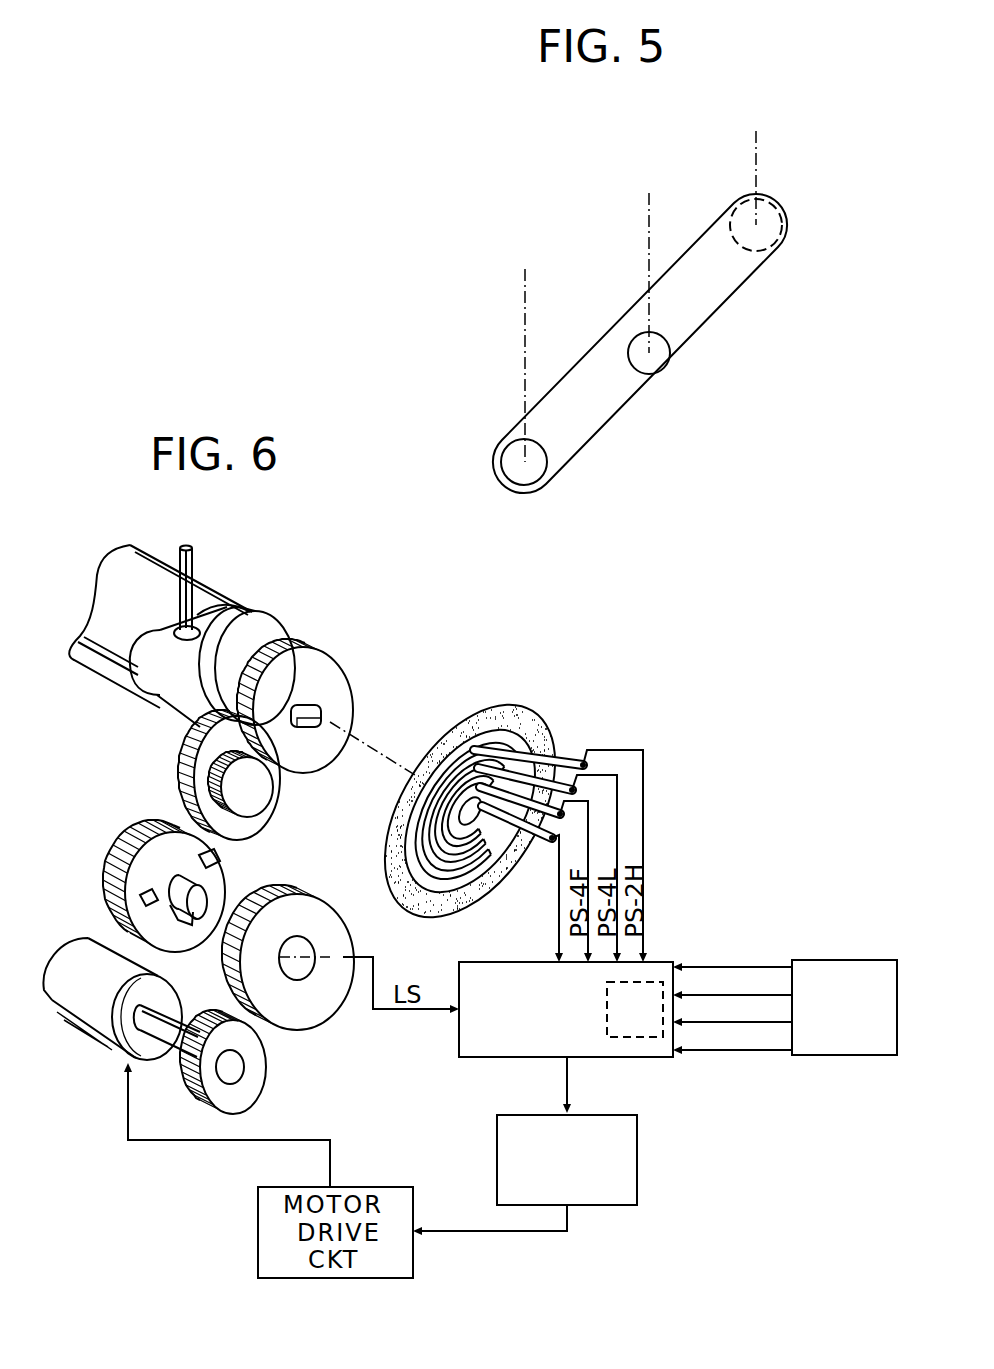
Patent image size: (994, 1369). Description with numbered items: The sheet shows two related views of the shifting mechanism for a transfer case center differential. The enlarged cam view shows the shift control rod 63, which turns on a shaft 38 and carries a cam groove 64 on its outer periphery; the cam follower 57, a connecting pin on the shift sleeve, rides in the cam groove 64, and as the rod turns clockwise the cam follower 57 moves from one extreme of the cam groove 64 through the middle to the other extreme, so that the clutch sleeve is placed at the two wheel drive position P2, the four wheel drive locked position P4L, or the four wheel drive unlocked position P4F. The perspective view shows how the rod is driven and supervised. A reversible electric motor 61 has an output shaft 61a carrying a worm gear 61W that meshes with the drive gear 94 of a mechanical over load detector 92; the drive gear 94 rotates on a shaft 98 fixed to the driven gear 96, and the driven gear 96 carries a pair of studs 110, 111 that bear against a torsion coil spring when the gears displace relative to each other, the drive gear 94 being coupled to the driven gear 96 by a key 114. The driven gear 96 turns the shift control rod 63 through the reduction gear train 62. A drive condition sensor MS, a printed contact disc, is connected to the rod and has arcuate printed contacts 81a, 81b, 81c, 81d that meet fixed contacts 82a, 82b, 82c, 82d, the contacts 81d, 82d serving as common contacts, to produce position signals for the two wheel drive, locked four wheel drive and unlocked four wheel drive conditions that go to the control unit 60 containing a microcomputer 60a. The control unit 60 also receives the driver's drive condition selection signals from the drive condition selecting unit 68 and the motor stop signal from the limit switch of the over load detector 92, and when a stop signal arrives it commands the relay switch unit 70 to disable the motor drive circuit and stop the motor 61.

In FIG. 5, the shaft 38 is at (771, 244).
In FIG. 5, the cam follower 57 is at (662, 364).
In FIG. 6, the cam follower 57 is at (190, 563).
In FIG. 5, the cam groove 64 is at (713, 305).
In FIG. 6, the cam groove 64 is at (147, 697).
In FIG. 5, the two wheel drive position P2 is at (756, 160).
In FIG. 5, the four wheel drive differential locked position P4L is at (645, 255).
In FIG. 5, the four wheel drive differential unlocked position P4F is at (523, 348).
In FIG. 6, the shift control rod 63 is at (262, 615).
In FIG. 6, the reduction gear train 62 is at (282, 804).
In FIG. 6, the mechanical over load detector 92 is at (320, 848).
In FIG. 6, the driven gear 96 is at (212, 891).
In FIG. 6, the stud 110 is at (121, 898).
In FIG. 6, the stud 111 is at (157, 833).
In FIG. 6, the shaft 98 is at (193, 915).
In FIG. 6, the clutch key 114 is at (172, 935).
In FIG. 6, the drive gear 94 is at (330, 892).
In FIG. 6, the electric motor 61 is at (92, 1035).
In FIG. 6, the output shaft 61a is at (165, 1060).
In FIG. 6, the worm gear 61W is at (257, 1053).
In FIG. 6, the drive condition sensor MS is at (533, 712).
In FIG. 6, the arcuate printed contact 81a is at (437, 783).
In FIG. 6, the arcuate printed contact 81b is at (460, 773).
In FIG. 6, the arcuate printed contact 81c is at (470, 743).
In FIG. 6, the common printed contact 81d is at (470, 815).
In FIG. 6, the fixed electric contact 82a is at (530, 838).
In FIG. 6, the fixed electric contact 82b is at (562, 765).
In FIG. 6, the fixed electric contact 82c is at (547, 743).
In FIG. 6, the common fixed contact 82d is at (522, 858).
In FIG. 6, the control unit 60 is at (658, 960).
In FIG. 6, the microcomputer 60a is at (642, 1037).
In FIG. 6, the drive condition selecting unit 68 is at (838, 960).
In FIG. 6, the relay switch unit 70 is at (640, 1160).